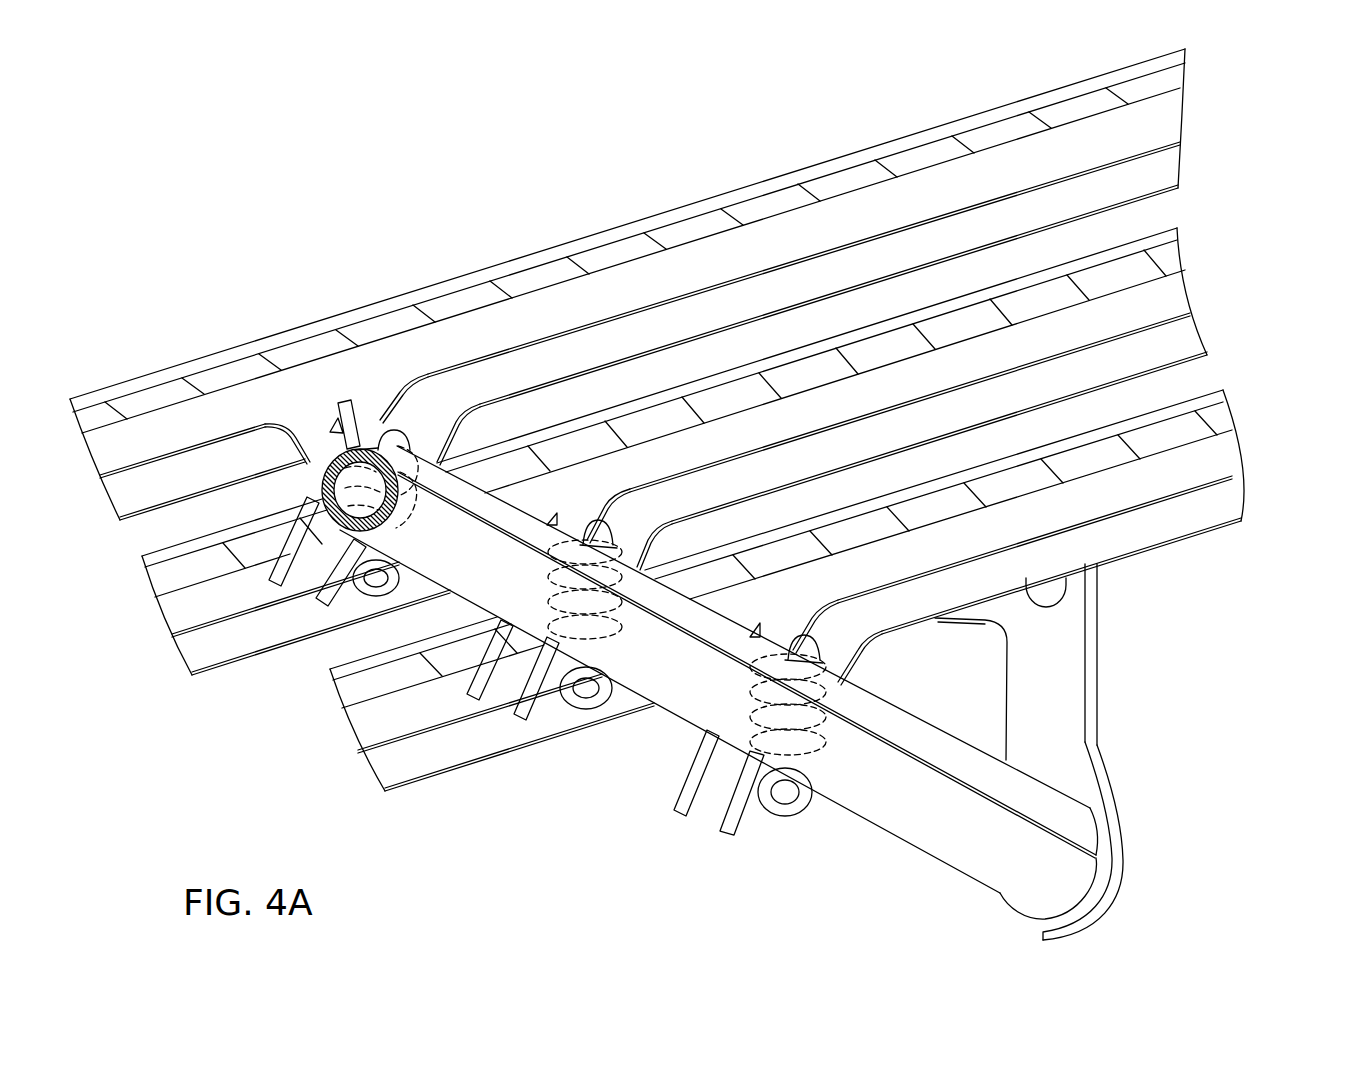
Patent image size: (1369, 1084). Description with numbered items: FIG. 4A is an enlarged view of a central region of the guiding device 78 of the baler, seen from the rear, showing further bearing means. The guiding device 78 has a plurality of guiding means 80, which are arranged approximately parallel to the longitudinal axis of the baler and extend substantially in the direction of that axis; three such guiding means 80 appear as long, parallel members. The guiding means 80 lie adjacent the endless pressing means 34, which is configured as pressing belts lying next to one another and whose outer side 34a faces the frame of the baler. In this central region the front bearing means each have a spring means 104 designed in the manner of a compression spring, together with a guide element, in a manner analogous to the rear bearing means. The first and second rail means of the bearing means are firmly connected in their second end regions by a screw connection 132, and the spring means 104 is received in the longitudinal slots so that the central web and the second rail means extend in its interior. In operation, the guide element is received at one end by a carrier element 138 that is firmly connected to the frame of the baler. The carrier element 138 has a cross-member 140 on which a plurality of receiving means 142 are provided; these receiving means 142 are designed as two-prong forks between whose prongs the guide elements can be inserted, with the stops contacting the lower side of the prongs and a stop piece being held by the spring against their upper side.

The outer side 34a is at (390, 320).
The guiding means 80 is at (698, 275).
The pressing means 34 is at (443, 304).
The spring means 104 is at (422, 464).
The guiding device 78 is at (1081, 336).
The cross-member 140 is at (462, 575).
The receiving means 142 is at (297, 610).
The screw connection 132 is at (350, 600).
The carrier element 138 is at (414, 682).